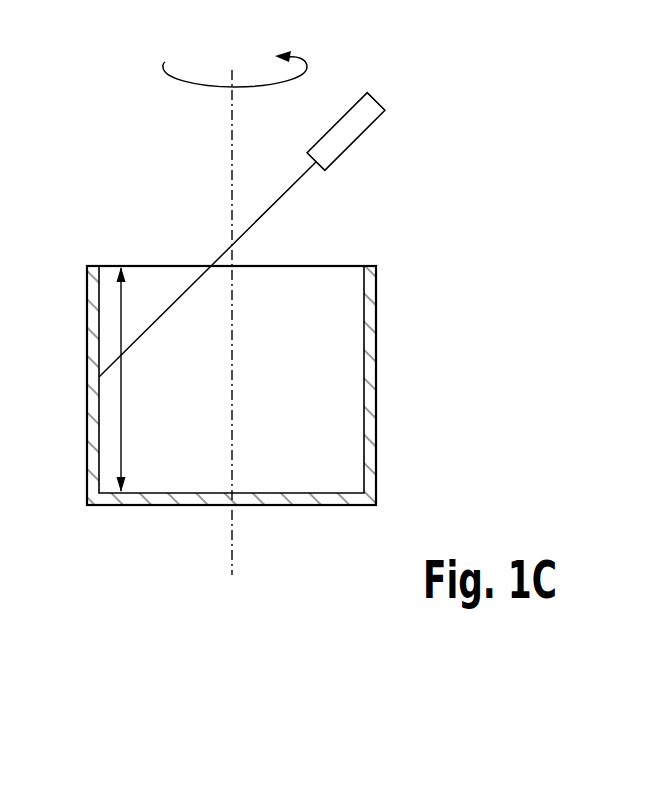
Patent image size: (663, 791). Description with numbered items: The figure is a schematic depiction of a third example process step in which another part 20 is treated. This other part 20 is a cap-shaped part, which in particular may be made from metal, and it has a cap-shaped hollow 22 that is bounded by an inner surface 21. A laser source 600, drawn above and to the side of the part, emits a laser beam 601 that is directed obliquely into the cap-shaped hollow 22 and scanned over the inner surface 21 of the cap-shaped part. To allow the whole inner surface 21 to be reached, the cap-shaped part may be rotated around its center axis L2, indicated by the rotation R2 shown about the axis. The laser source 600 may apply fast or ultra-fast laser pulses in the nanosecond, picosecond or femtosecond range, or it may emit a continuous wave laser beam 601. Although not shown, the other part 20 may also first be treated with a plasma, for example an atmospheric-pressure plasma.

The other part 20 is at (377, 350).
The inner surface 21 is at (98, 314).
The cap-shaped hollow 22 is at (342, 257).
The laser source 600 is at (383, 103).
The laser beam 601 is at (292, 188).
The center axis L2 is at (232, 148).
The rotation R2 is at (307, 67).